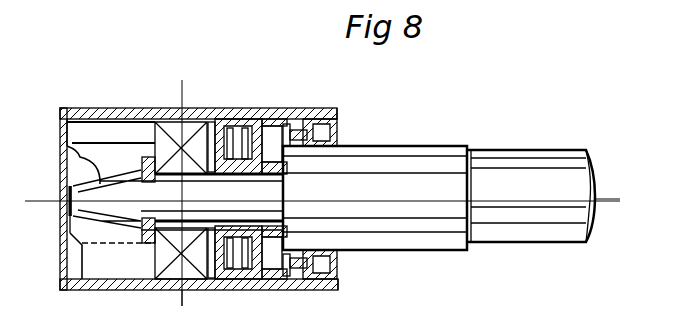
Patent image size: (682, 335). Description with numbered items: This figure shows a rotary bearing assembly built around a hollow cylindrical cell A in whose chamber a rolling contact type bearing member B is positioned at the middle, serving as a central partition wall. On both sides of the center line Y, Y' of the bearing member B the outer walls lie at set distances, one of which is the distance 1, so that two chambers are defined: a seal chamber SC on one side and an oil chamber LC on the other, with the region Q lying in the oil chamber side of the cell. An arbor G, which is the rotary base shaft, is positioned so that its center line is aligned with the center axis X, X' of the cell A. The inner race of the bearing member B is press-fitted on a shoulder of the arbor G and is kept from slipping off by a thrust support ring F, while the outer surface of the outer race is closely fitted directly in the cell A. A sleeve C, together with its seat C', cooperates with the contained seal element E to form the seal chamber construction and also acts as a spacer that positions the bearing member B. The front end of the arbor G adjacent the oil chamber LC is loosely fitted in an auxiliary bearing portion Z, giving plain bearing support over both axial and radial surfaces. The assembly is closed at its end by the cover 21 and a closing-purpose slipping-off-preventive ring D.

The hollow cylindrical cell A is at (104, 110).
The bearing member B is at (165, 122).
The center line YY' Y is at (183, 181).
The center line YY' Y' is at (182, 311).
The seal element E is at (235, 125).
The sleeve C is at (274, 168).
The ring seat C' is at (276, 244).
The end cover 21 is at (333, 134).
The arbor G is at (417, 148).
The center axis XX' X is at (313, 204).
The center axis XX' X' is at (619, 199).
The auxiliary bearing portion Z is at (70, 156).
The distance 1 is at (62, 208).
The oil chamber LC is at (98, 246).
The chamber Q is at (113, 270).
The thrust support ring F is at (156, 232).
The seal chamber SC is at (233, 258).
The closing-purpose slipping-off-preventive ring D is at (328, 288).